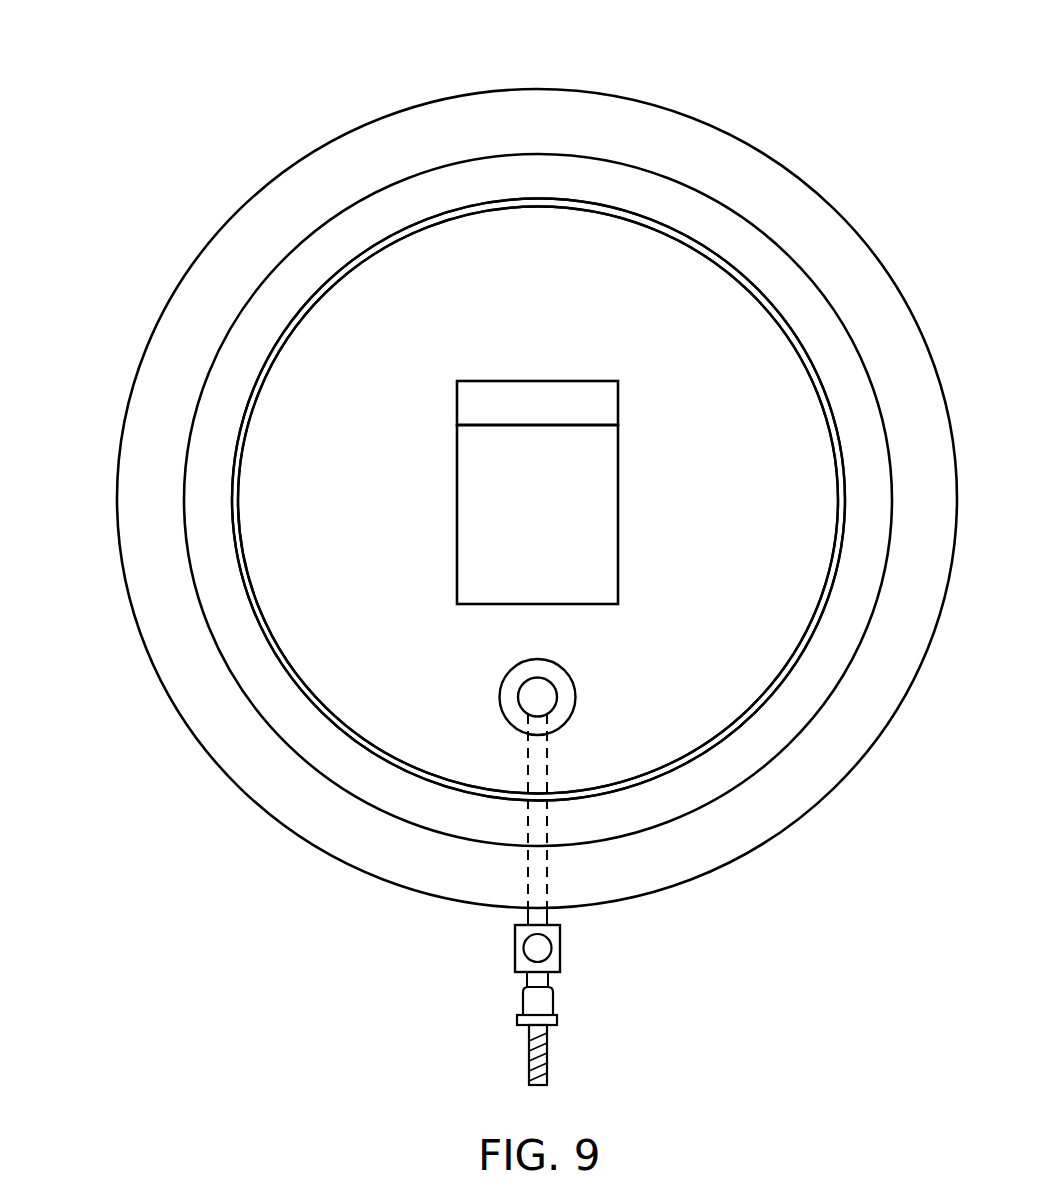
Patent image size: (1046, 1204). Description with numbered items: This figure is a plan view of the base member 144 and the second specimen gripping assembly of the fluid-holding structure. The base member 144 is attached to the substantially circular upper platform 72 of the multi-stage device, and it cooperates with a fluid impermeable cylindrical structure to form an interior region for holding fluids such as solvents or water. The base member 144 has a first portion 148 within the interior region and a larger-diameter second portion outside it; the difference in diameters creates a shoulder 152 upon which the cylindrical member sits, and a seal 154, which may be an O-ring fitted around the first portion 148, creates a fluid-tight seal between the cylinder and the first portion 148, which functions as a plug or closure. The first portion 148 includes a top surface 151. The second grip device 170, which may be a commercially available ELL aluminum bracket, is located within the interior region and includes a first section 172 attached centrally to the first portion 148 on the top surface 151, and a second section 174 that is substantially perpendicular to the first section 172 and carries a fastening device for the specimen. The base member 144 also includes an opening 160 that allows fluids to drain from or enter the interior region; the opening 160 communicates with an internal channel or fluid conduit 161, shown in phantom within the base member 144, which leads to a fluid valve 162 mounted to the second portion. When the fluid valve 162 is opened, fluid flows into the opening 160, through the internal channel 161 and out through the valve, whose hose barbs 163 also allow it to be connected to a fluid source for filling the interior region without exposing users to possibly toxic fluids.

The base member 144 is at (294, 106).
The upper platform 72 is at (537, 89).
The shoulder 152 is at (253, 325).
The seal 154 is at (232, 532).
The first portion 148 is at (646, 282).
The top surface 151 is at (680, 410).
The second grip device 170 is at (520, 492).
The second section 174 is at (469, 401).
The first section 172 is at (619, 522).
The opening 160 is at (548, 694).
The internal channel or fluid conduit 161 is at (550, 772).
The fluid valve 162 is at (562, 930).
The hose barbs 163 is at (548, 1052).